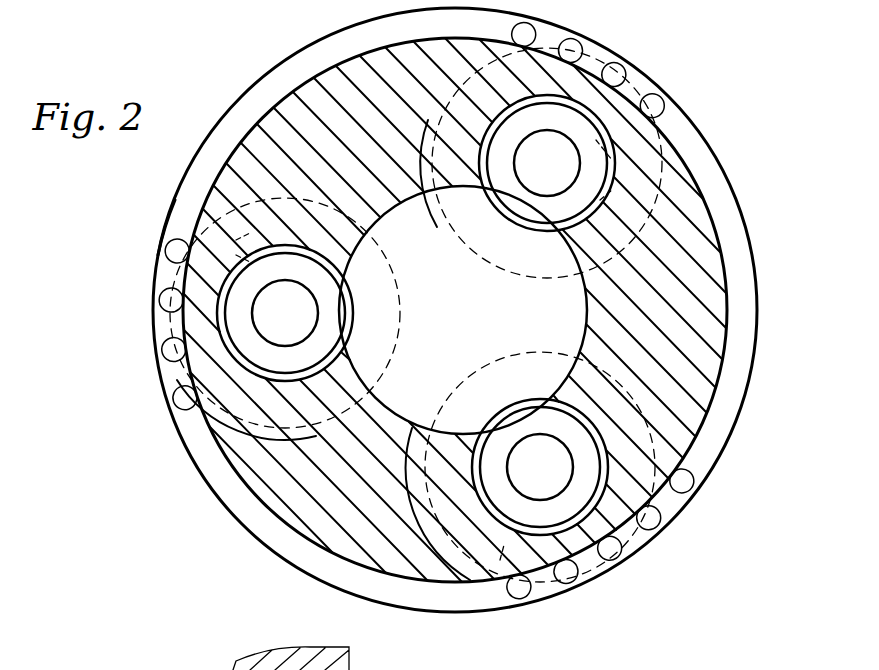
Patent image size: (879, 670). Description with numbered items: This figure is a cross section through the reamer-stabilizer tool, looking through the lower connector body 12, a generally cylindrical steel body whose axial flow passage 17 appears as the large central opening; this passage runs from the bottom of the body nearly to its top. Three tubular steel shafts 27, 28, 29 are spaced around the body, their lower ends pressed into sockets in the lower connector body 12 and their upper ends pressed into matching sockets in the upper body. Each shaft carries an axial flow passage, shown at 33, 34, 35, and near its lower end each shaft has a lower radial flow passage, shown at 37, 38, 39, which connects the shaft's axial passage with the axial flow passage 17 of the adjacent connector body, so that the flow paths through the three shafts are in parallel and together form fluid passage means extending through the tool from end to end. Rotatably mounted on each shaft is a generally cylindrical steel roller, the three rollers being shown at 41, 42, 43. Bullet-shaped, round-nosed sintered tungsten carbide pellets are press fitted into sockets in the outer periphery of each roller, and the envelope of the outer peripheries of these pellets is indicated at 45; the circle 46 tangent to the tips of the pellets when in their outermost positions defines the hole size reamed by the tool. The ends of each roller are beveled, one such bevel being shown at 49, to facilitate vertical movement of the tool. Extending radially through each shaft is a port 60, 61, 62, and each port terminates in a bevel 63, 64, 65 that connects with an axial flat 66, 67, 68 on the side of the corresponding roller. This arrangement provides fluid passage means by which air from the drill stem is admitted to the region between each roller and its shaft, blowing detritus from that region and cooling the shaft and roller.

The lower connector body 12 is at (243, 460).
The axial flow passage 17 is at (555, 320).
The tubular steel shaft 27 is at (222, 303).
The tubular steel shaft 28 is at (558, 122).
The tubular steel shaft 29 is at (547, 512).
The axial flow passage 33 is at (312, 290).
The axial flow passage 34 is at (523, 157).
The axial flow passage 35 is at (573, 466).
The lower radial flow passage 37 is at (300, 346).
The lower radial flow passage 38 is at (575, 235).
The lower radial flow passage 39 is at (533, 427).
The roller 41 is at (160, 256).
The roller 42 is at (630, 100).
The roller 43 is at (593, 563).
The envelope of pellet outer peripheries 45 is at (549, 33).
The hole-size circle 46 is at (315, 43).
The roller end bevel 49 is at (537, 93).
The port 60 is at (284, 288).
The port 61 is at (598, 165).
The port 62 is at (480, 492).
The bevel 63 is at (250, 228).
The bevel 64 is at (598, 180).
The bevel 65 is at (475, 517).
The axial flat 66 is at (240, 208).
The axial flat 67 is at (598, 196).
The axial flat 68 is at (453, 513).